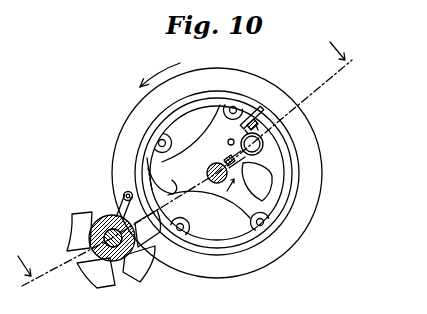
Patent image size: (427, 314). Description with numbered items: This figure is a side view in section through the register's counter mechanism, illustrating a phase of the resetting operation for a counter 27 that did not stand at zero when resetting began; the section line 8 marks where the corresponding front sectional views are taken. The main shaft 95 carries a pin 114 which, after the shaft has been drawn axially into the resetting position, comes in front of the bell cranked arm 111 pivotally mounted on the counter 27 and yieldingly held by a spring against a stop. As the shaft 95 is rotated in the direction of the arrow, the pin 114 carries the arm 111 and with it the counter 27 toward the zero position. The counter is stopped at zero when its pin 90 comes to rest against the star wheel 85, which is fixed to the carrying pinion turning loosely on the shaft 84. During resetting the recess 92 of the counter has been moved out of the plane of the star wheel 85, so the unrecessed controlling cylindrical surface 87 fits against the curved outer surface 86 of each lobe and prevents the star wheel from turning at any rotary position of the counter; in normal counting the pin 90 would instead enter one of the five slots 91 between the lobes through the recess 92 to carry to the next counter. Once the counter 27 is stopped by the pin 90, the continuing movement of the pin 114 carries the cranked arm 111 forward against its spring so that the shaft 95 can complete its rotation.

The section line 8— 8 is at (188, 167).
The counter 27 is at (257, 84).
The shaft 84 is at (89, 233).
The star wheel 85 is at (103, 268).
The outer surface of star wheel lobe 86 is at (142, 268).
The controlling cylindrical surface 87 is at (158, 118).
The pin 90 is at (125, 192).
The slot 91 is at (123, 206).
The recess 92 is at (152, 178).
The main shaft 95 is at (216, 184).
The bell cranked arm 111 is at (263, 144).
The pin 114 is at (242, 162).